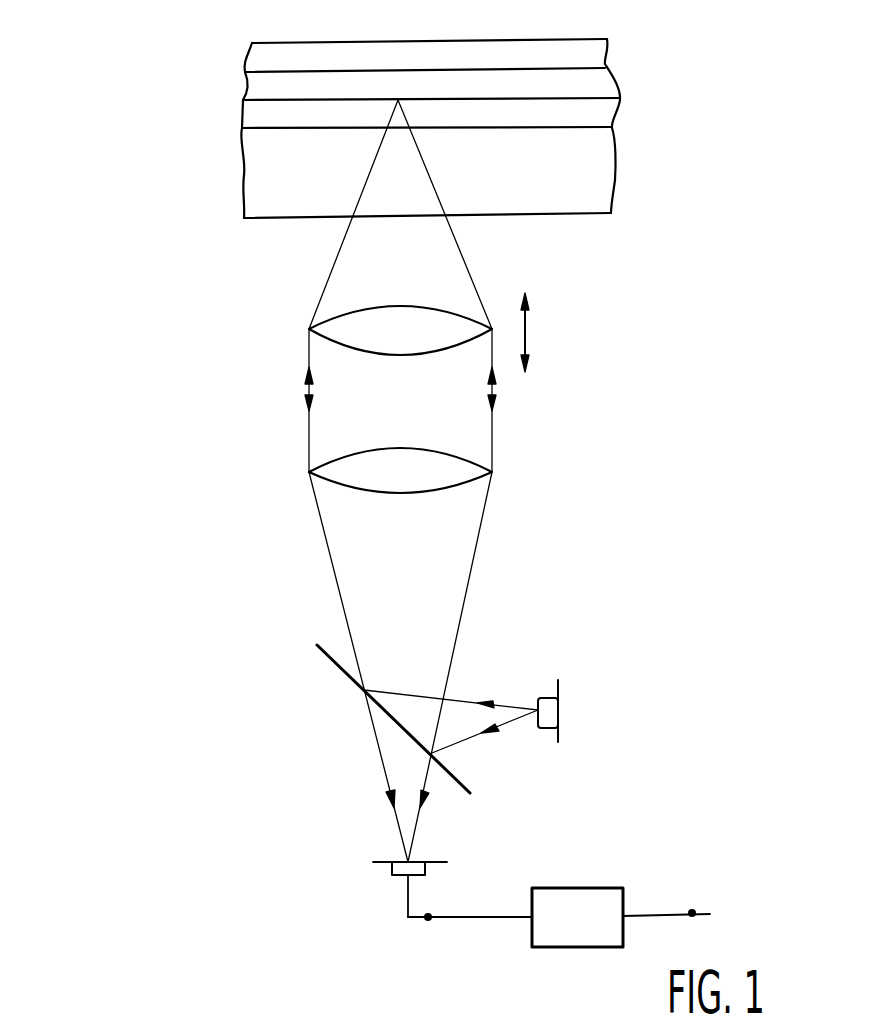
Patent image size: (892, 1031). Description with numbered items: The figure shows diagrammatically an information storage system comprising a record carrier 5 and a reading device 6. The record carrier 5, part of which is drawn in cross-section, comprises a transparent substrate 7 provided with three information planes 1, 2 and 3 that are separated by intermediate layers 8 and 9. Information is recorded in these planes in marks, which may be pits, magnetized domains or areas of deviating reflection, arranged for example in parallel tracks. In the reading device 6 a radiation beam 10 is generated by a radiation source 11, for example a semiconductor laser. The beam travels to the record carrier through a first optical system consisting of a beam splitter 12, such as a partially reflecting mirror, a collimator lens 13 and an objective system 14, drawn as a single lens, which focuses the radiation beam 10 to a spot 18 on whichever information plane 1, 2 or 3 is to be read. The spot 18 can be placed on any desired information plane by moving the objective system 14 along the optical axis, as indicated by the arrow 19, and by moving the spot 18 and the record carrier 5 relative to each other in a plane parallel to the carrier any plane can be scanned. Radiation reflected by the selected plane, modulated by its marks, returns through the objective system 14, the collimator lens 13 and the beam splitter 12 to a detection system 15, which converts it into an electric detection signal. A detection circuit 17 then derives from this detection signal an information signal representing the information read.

The information plane 1 is at (613, 128).
The information plane 2 is at (620, 98).
The information plane 3 is at (607, 64).
The record carrier 5 is at (62, 157).
The reading device 6 is at (85, 690).
The transparent substrate 7 is at (593, 188).
The intermediate layer 8 is at (600, 113).
The intermediate layer 9 is at (595, 84).
The radiation beam 10 is at (467, 262).
The radiation source 11 is at (550, 730).
The beam splitter 12 is at (324, 657).
The collimator lens 13 is at (309, 472).
The objective system 14 is at (308, 329).
The detection system 15 is at (392, 869).
The detection circuit 17 is at (590, 892).
The spot 18 is at (398, 100).
The arrow 19 is at (530, 328).